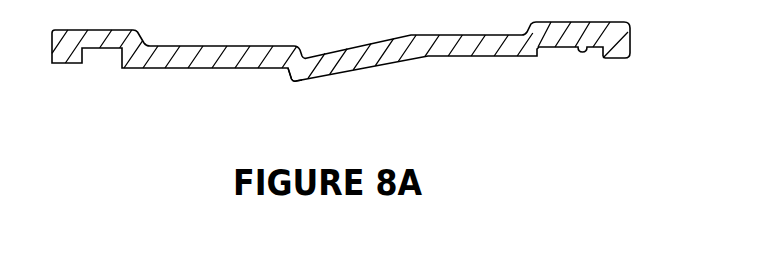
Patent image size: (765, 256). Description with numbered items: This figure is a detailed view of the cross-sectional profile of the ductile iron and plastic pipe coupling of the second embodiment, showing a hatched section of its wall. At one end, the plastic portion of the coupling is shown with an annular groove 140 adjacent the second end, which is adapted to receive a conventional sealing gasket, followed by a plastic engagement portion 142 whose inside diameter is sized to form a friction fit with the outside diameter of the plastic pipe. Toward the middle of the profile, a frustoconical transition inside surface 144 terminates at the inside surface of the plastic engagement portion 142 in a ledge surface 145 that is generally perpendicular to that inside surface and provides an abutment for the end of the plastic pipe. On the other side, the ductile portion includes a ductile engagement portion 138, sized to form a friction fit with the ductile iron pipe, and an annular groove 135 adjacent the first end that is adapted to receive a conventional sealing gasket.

The annular groove 135 is at (603, 65).
The ductile engagement portion 138 is at (477, 63).
The annular groove 140 is at (105, 70).
The plastic engagement portion 142 is at (205, 70).
The frustoconical transition inside surface 144 is at (340, 77).
The ledge surface 145 is at (287, 78).